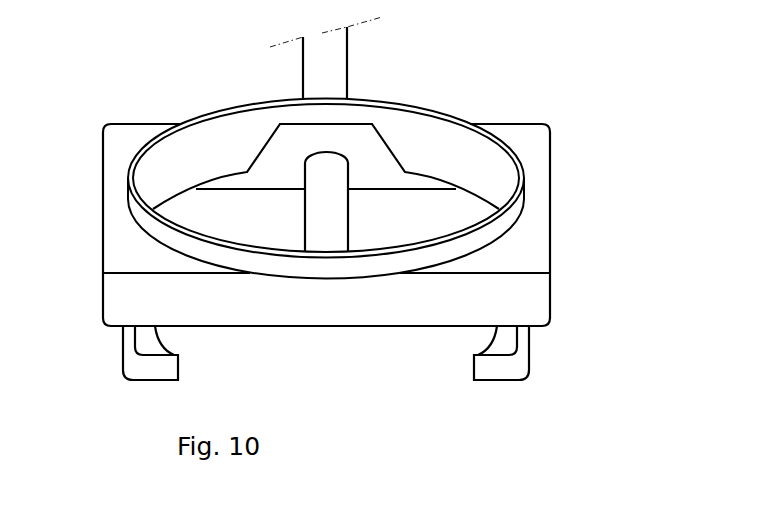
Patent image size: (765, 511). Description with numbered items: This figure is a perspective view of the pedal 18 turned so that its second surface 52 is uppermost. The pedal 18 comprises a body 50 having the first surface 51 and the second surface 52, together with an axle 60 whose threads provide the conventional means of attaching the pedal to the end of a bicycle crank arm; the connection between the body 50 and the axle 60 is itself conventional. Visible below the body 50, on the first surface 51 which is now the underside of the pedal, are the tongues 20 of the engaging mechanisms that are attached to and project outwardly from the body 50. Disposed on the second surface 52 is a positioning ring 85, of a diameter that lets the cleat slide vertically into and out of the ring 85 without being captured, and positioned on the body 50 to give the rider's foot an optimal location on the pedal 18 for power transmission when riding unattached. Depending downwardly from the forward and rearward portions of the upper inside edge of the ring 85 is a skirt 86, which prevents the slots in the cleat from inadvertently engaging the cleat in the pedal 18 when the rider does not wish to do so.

The pedal 18 is at (351, 345).
The tongue 20 is at (160, 365).
The body 50 is at (120, 295).
The first surface 51 is at (400, 326).
The second surface 52 is at (537, 147).
The axle 60 is at (328, 80).
The positioning ring 85 is at (393, 102).
The skirt 86 is at (185, 143).